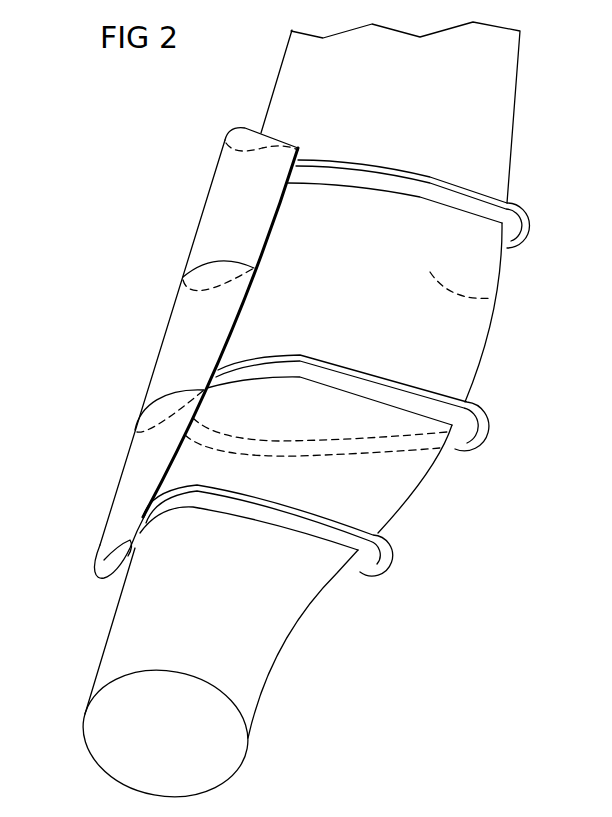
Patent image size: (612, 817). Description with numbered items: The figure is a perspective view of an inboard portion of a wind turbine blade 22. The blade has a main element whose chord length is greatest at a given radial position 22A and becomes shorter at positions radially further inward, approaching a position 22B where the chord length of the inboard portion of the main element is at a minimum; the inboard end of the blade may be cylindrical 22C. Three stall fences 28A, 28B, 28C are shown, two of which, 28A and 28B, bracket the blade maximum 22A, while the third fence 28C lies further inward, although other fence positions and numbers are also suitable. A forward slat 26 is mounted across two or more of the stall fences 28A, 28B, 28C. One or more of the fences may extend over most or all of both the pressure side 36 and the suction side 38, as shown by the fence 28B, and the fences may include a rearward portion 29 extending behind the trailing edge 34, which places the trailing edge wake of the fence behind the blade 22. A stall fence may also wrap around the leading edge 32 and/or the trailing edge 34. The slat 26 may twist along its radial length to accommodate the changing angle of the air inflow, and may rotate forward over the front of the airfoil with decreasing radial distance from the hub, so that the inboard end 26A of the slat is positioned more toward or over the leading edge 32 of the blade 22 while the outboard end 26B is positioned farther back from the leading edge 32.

The wind turbine blade 22 is at (448, 516).
The maximum chord position 22A is at (487, 332).
The minimum chord position 22B is at (265, 665).
The cylindrical inboard end 22C is at (168, 670).
The forward slat 26 is at (166, 336).
The inboard end of slat 26A is at (100, 528).
The outboard end of slat 26B is at (247, 127).
The first stall fence 28A is at (403, 170).
The second stall fence 28B is at (340, 368).
The third stall fence 28C is at (237, 510).
The rearward portion 29 is at (518, 230).
The leading edge 32 is at (272, 92).
The trailing edge 34 is at (518, 107).
The pressure side 36 is at (495, 298).
The suction side 38 is at (370, 265).